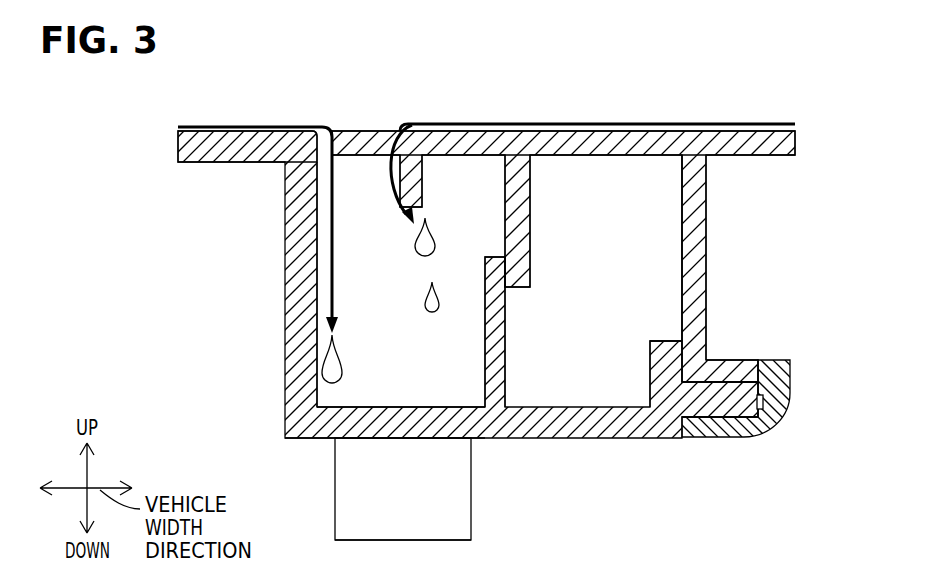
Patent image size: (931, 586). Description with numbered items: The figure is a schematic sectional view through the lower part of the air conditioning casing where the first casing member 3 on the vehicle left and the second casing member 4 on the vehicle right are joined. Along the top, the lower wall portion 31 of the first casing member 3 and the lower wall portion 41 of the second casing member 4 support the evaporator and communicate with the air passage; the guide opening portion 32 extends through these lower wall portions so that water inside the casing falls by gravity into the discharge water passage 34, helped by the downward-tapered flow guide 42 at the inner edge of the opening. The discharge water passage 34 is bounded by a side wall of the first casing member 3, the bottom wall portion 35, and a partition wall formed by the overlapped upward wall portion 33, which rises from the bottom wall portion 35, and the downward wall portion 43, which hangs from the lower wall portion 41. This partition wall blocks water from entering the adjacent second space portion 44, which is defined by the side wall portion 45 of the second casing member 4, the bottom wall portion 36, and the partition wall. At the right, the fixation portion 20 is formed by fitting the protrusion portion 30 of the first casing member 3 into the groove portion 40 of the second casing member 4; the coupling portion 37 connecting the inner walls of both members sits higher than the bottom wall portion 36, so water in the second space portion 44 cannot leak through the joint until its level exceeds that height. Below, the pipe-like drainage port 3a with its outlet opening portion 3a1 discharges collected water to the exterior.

The first casing member 3 is at (287, 383).
The drainage port 3a is at (471, 469).
The outlet opening portion 3a1 is at (456, 540).
The second casing member 4 is at (707, 265).
The fixation portion 20 is at (782, 418).
The protrusion portion 30 is at (733, 405).
The lower wall portion 31 is at (248, 131).
The guide opening portion 32 is at (335, 128).
The upward wall portion 33 is at (507, 318).
The discharge water passage 34 is at (345, 226).
The bottom wall portion 35 is at (343, 398).
The bottom wall portion 36 is at (598, 405).
The coupling portion 37 is at (663, 343).
The groove portion 40 is at (762, 360).
The lower wall portion 41 is at (613, 132).
The flow guide 42 is at (420, 201).
The downward wall portion 43 is at (528, 216).
The second space portion 44 is at (637, 237).
The side wall portion 45 is at (703, 245).